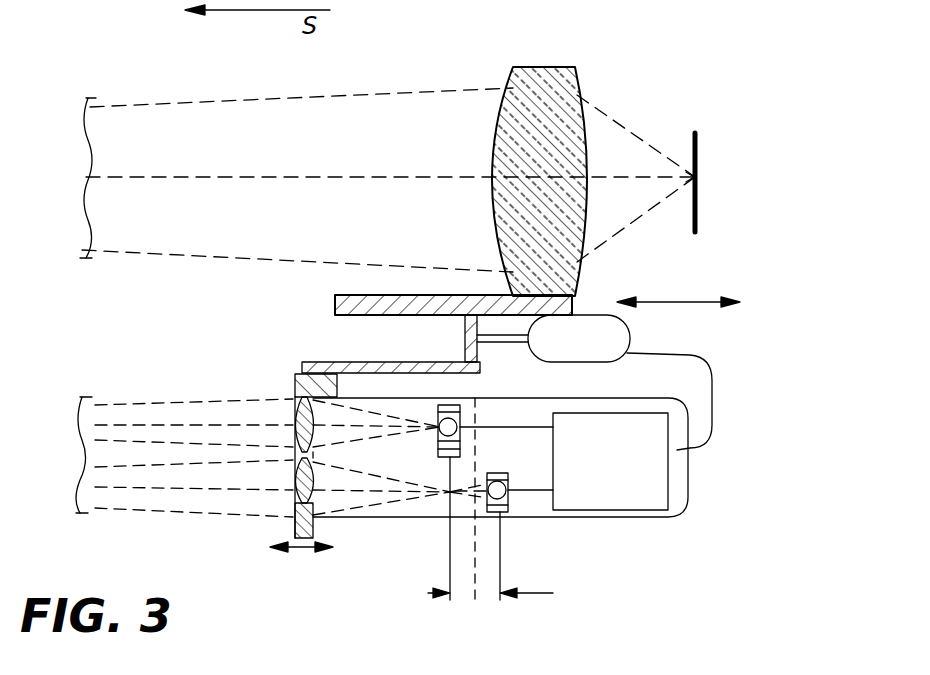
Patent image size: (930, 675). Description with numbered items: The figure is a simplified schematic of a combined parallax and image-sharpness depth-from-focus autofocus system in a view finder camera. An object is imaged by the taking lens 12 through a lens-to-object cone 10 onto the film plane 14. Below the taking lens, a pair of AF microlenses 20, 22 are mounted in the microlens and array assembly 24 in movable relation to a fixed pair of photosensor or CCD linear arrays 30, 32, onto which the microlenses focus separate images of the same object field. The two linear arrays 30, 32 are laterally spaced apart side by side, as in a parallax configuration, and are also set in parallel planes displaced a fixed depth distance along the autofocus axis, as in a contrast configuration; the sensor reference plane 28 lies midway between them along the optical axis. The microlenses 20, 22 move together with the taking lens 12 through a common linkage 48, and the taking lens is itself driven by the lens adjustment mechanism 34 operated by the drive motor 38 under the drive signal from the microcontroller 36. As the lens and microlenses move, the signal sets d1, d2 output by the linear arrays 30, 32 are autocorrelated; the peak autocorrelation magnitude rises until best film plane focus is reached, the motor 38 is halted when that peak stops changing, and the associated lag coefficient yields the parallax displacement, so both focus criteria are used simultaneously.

The lens-to-object cone 10 is at (122, 342).
The taking lens 12 is at (570, 100).
The film plane 14 is at (697, 150).
The AF microlens 20 is at (292, 410).
The AF microlens 22 is at (292, 498).
The microlens and array assembly 24 is at (422, 512).
The sensor reference plane 28 is at (475, 605).
The CCD linear array 30 is at (474, 406).
The CCD linear array 32 is at (507, 512).
The lens adjustment mechanism 34 is at (425, 327).
The microcontroller 36 is at (650, 473).
The drive motor 38 is at (617, 333).
The common linkage 48 is at (298, 366).
The signal set d1 is at (460, 430).
The signal set d2 is at (508, 496).